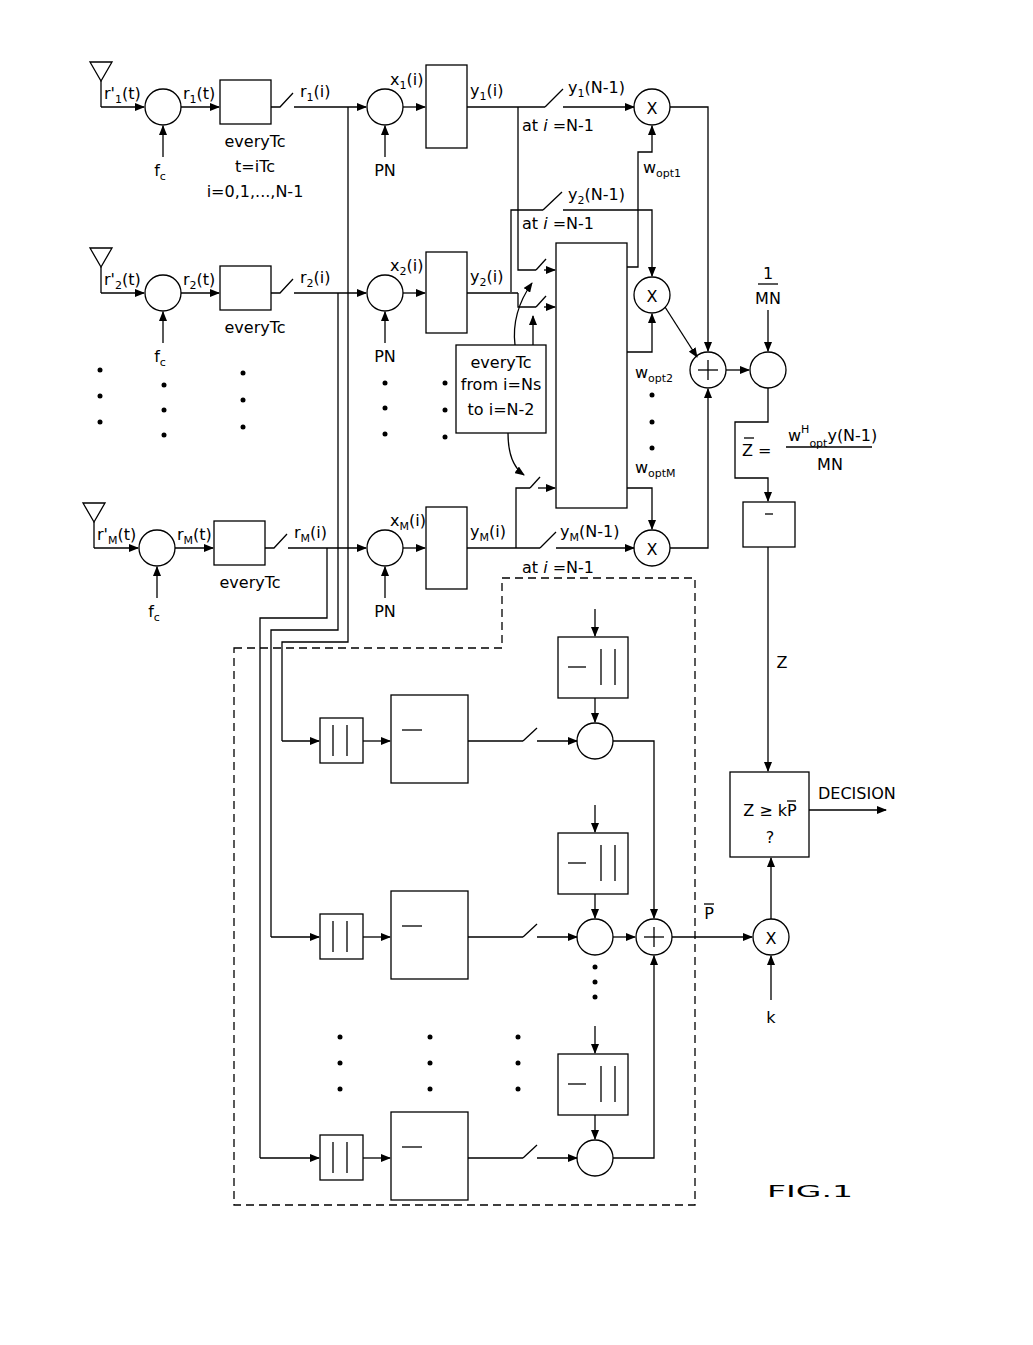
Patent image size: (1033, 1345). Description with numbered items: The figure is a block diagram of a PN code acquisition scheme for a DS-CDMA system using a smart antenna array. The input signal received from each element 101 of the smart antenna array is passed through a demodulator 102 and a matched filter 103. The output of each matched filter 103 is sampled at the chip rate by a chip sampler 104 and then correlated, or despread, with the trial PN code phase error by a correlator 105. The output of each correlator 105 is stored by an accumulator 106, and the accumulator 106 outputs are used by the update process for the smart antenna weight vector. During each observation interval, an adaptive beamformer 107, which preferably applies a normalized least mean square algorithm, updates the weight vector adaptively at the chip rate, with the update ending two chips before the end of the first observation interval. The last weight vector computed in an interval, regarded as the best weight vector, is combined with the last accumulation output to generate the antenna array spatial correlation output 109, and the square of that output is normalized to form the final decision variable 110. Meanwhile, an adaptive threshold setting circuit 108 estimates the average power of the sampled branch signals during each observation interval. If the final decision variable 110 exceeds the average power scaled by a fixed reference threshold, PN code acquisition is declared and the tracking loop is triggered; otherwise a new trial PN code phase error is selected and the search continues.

The element of the smart antenna array 101 is at (104, 63).
The demodulator 102 is at (166, 89).
The matched filter 103 is at (244, 80).
The chip sampler 104 is at (297, 92).
The correlator 105 is at (372, 89).
The accumulator 106 is at (443, 65).
The adaptive beamformer 107 is at (628, 440).
The adaptive threshold setting circuit 108 is at (697, 766).
The antenna array spatial correlation output 109 is at (771, 409).
The final decision variable 110 is at (769, 595).